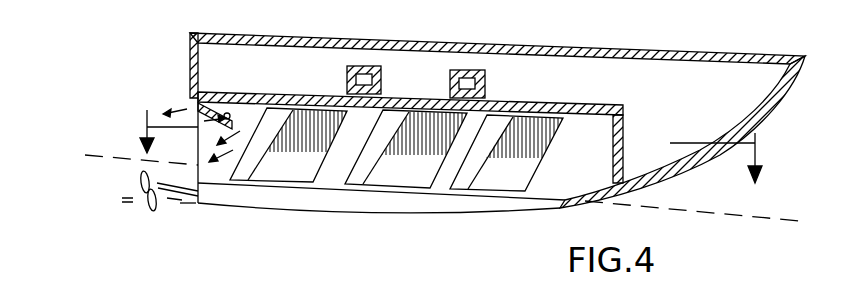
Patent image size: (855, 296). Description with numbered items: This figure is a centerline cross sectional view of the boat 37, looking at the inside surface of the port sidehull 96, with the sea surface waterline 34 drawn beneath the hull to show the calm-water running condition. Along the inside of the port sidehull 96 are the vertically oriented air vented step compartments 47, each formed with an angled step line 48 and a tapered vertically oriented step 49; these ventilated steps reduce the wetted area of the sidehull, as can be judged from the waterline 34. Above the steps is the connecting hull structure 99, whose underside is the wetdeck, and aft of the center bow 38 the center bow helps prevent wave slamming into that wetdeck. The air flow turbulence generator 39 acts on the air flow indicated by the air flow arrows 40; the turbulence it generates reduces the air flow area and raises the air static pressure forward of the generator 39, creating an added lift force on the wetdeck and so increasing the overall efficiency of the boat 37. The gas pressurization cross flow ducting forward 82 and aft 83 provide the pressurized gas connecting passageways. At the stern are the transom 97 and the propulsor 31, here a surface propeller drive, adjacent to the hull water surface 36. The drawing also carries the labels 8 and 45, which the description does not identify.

The section line 8- 8 is at (450, 146).
The propulsor 31 is at (142, 175).
The sea surface waterline 34 is at (108, 156).
The hull water surface 36 is at (182, 204).
The boat 37 is at (610, 49).
The center bow 38 is at (683, 170).
The air flow turbulence generator 39 is at (240, 110).
The air flow arrows 40 is at (188, 106).
The hull bottom 45 is at (527, 210).
The vertically oriented air vented step compartments 47 is at (326, 138).
The angled step line 48 is at (545, 79).
The tapered vertically oriented step 49 is at (292, 135).
The gas pressurization cross flow ducting forward 82 is at (485, 82).
The gas pressurization cross flow ducting aft 83 is at (373, 68).
The port sidehull 96 is at (595, 176).
The transom 97 is at (190, 63).
The connecting hull structure 99 is at (605, 103).